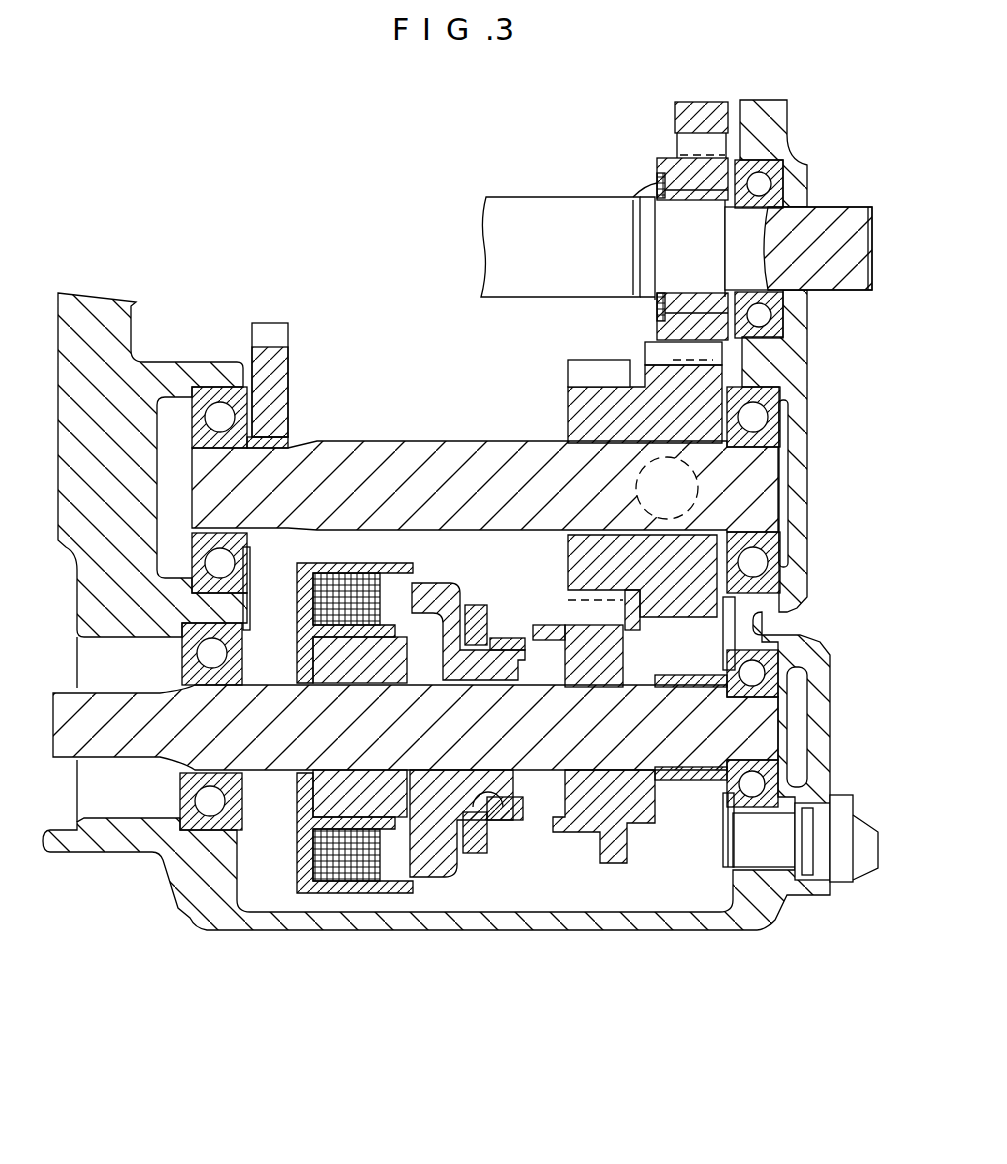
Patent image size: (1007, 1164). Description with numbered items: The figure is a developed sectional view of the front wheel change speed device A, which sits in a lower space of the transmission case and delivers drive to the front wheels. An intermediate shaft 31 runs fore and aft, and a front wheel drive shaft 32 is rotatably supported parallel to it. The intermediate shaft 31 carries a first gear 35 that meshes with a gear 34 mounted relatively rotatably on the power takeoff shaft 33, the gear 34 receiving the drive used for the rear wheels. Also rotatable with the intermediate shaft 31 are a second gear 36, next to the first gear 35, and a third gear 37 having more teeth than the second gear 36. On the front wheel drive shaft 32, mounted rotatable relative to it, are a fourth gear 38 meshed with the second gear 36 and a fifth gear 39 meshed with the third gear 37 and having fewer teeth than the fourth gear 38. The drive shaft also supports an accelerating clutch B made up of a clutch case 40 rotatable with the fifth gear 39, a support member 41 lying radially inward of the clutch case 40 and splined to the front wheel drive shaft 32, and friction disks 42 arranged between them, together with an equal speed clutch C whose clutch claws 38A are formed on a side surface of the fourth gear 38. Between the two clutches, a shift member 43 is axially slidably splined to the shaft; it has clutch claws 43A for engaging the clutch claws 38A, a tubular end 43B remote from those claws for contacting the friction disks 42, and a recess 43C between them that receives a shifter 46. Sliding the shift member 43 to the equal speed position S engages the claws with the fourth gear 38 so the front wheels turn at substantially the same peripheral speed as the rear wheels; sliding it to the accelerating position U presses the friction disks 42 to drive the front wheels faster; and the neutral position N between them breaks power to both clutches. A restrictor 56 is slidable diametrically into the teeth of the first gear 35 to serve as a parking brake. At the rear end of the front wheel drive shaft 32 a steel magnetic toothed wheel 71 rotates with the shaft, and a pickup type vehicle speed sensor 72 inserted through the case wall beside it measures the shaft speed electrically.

The intermediate shaft 31 is at (385, 443).
The front wheel drive shaft 32 is at (767, 740).
The power takeoff shaft 33 is at (553, 200).
The gear 34 is at (678, 173).
The first gear 35 is at (660, 353).
The second gear 36 is at (568, 400).
The third gear 37 is at (282, 387).
The fourth gear 38 is at (632, 822).
The clutch claws 38A is at (545, 650).
The fifth gear 39 is at (267, 803).
The clutch case 40 is at (307, 890).
The support member 41 is at (368, 672).
The friction disks 42 is at (380, 897).
The shift member 43 is at (477, 668).
The clutch claws 43A is at (503, 637).
The tubular end 43B is at (420, 870).
The recess 43C is at (482, 793).
The shifter 46 is at (477, 602).
The restrictor 56 is at (700, 498).
The magnetic toothed wheel 71 is at (723, 802).
The vehicle speed sensor 72 is at (843, 882).
The front wheel change speed device A is at (392, 212).
The accelerating clutch B is at (427, 570).
The equal speed clutch C is at (535, 862).
The accelerating position U is at (443, 867).
The neutral position N is at (475, 850).
The equal speed position S is at (503, 833).